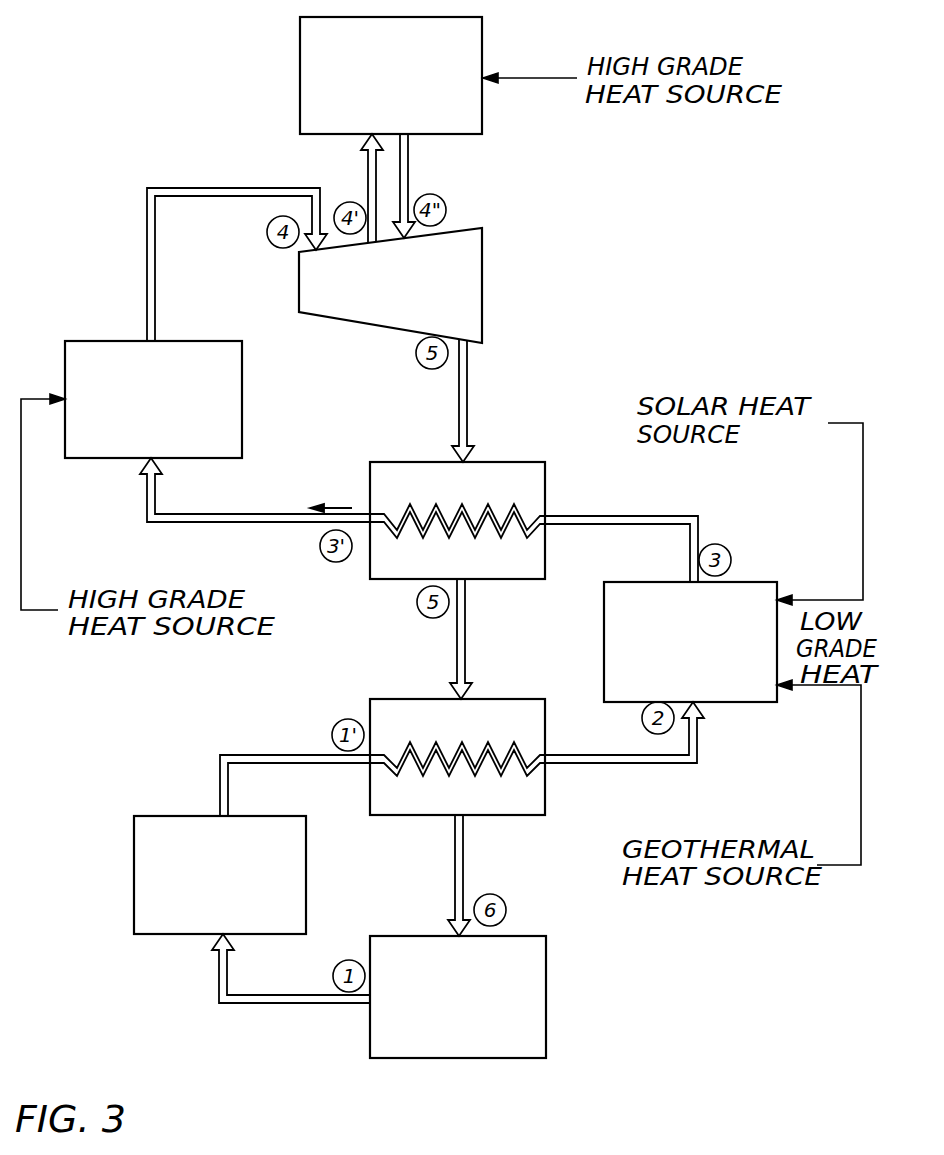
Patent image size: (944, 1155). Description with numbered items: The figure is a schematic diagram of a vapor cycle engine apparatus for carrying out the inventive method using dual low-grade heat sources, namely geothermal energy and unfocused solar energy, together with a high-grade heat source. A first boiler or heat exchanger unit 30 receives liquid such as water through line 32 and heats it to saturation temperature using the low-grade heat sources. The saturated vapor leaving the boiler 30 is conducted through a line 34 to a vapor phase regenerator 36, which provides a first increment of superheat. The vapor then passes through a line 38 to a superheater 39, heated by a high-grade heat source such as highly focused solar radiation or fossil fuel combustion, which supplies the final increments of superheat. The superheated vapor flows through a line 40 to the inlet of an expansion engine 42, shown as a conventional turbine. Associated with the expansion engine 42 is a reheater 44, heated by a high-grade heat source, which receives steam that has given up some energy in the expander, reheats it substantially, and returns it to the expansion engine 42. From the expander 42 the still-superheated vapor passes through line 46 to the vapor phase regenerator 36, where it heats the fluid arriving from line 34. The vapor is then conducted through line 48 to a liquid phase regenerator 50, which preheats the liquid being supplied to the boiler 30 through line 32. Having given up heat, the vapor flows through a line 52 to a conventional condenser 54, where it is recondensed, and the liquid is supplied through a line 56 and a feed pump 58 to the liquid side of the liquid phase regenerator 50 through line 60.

The first boiler or heat exchanger unit 30 is at (756, 575).
The line 32 is at (645, 763).
The line 34 is at (629, 516).
The vapor phase regenerator 36 is at (507, 462).
The line 38 is at (197, 522).
The superheater 39 is at (243, 382).
The line 40 is at (170, 194).
The expansion engine 42 is at (493, 228).
The reheater 44 is at (483, 113).
The line 46 is at (467, 383).
The line 48 is at (466, 628).
The liquid phase regenerator 50 is at (546, 733).
The line 52 is at (464, 866).
The condenser 54 is at (547, 982).
The line 56 is at (255, 995).
The feed pump 58 is at (307, 870).
The line 60 is at (270, 763).